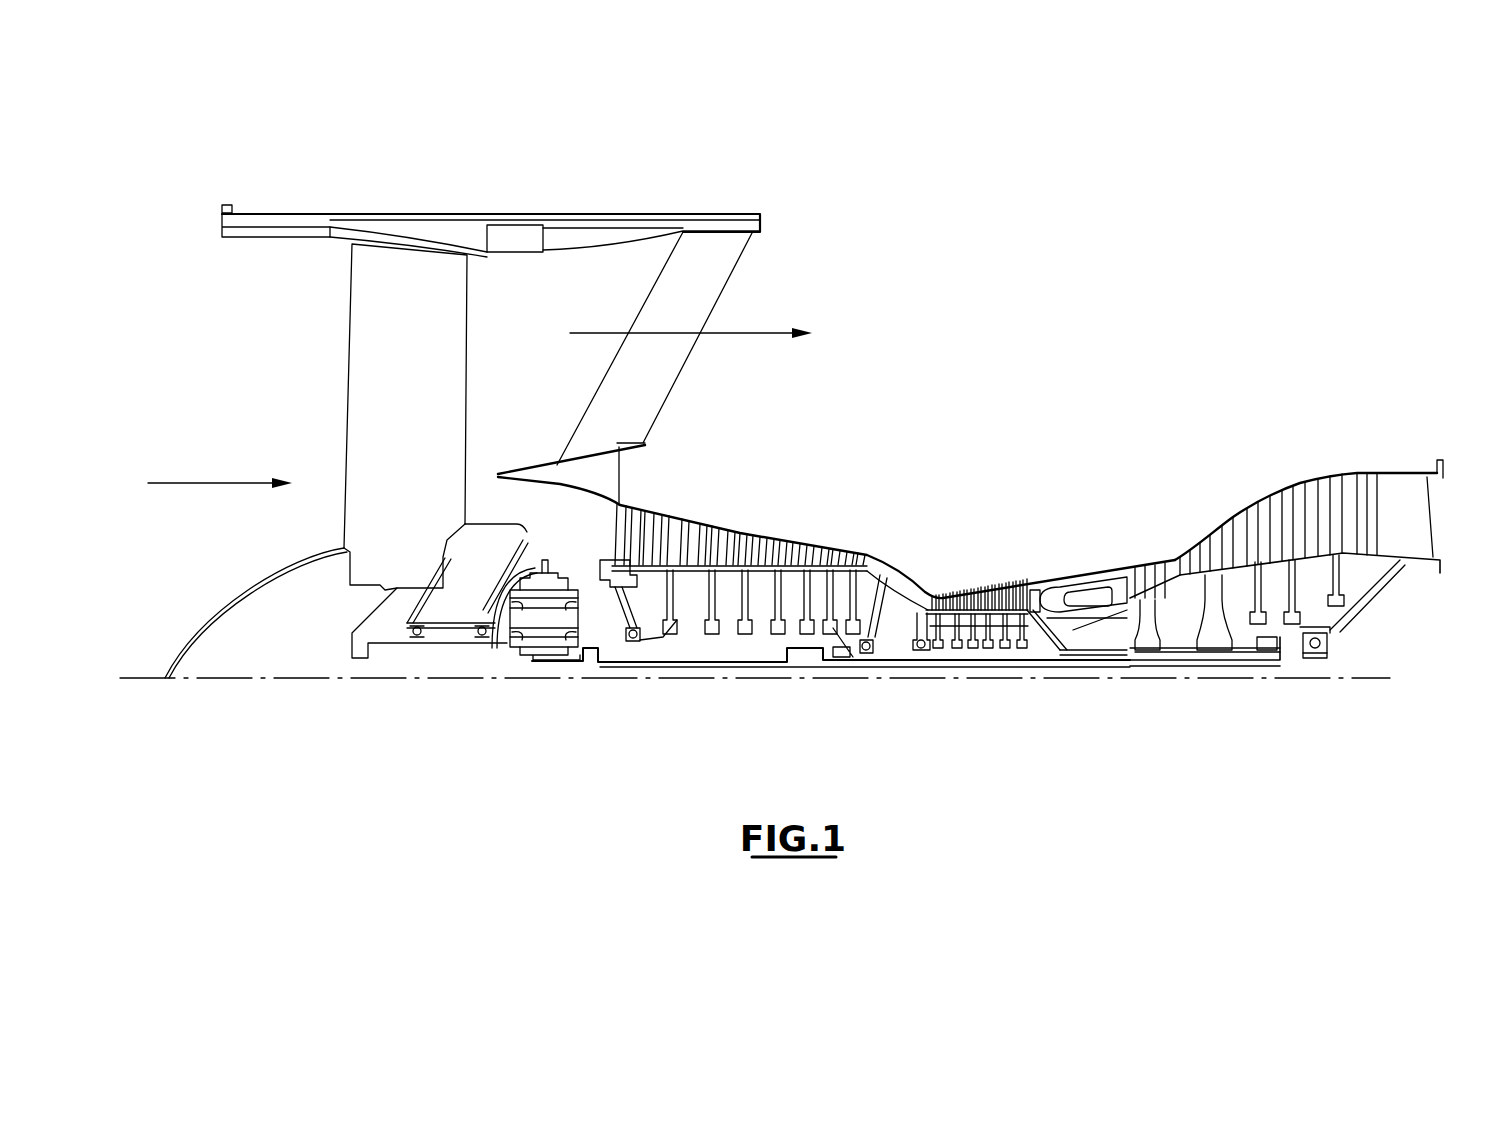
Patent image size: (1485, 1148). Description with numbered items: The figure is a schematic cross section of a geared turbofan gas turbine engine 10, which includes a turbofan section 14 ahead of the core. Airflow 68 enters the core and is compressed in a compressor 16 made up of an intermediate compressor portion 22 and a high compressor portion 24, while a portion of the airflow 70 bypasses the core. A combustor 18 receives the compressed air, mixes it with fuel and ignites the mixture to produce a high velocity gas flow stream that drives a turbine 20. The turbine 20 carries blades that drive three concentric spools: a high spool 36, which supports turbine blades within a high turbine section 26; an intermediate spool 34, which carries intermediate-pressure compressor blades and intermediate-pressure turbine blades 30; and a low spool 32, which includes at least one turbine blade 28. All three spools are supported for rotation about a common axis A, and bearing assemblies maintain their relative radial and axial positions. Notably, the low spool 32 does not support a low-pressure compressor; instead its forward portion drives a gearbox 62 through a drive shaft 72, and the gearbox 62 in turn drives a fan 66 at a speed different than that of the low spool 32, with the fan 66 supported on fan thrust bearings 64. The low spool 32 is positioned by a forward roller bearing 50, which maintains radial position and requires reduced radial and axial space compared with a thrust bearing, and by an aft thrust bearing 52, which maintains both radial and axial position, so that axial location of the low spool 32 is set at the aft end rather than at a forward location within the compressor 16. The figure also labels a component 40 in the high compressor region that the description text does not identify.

The geared turbofan gas turbine engine 10 is at (1096, 230).
The turbofan section 14 is at (213, 183).
The compressor 16 is at (638, 493).
The combustor 18 is at (1045, 538).
The turbine 20 is at (1385, 388).
The intermediate compressor portion 22 is at (908, 518).
The high compressor portion 24 is at (1018, 580).
The high turbine section 26 is at (1160, 555).
The turbine blade 28 is at (1383, 452).
The intermediate-pressure turbine blades 30 is at (1257, 500).
The low spool 32 is at (1233, 660).
The intermediate spool 34 is at (1185, 655).
The high spool 36 is at (1058, 655).
The high pressure compressor rotor 40 is at (967, 627).
The forward roller bearing 50 is at (846, 663).
The aft thrust bearing 52 is at (1305, 662).
The gearbox 62 is at (545, 640).
The fan thrust bearings 64 is at (482, 640).
The fan 66 is at (365, 357).
The airflow 68 is at (192, 483).
The bypass airflow 70 is at (768, 333).
The drive shaft 72 is at (688, 658).
The common axis A is at (1375, 678).